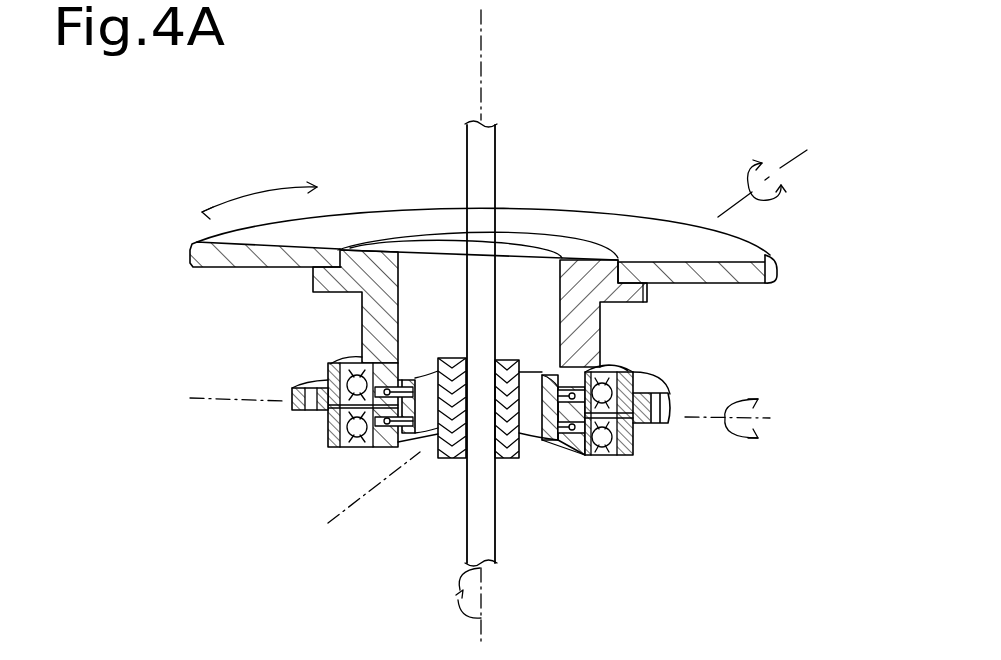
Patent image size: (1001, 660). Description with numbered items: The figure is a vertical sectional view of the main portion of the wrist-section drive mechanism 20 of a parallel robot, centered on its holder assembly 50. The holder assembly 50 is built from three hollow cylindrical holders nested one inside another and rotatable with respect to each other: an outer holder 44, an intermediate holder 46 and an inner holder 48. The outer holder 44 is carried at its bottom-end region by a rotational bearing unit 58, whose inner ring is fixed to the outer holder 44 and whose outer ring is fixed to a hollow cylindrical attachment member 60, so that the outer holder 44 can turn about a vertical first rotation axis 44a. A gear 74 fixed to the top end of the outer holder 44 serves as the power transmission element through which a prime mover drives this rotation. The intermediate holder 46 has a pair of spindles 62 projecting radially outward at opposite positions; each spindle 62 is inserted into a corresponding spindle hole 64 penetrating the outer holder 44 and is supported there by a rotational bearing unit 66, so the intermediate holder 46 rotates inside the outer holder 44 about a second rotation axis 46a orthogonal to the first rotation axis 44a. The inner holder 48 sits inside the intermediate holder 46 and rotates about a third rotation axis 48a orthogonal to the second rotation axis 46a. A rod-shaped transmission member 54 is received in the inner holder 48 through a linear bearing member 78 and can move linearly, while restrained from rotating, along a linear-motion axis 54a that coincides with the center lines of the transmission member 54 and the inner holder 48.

The wrist-section drive mechanism 20 is at (685, 88).
The outer holder 44 is at (362, 315).
The first rotation axis 44a is at (482, 30).
The intermediate holder 46 is at (533, 422).
The second rotation axis 46a is at (208, 399).
The inner holder 48 is at (447, 356).
The third rotation axis 48a is at (335, 524).
The holder assembly 50 is at (737, 315).
The transmission member 54 is at (472, 145).
The linear-motion axis 54a is at (481, 638).
The rotational bearing unit 58 is at (602, 447).
The attachment member 60 is at (672, 385).
The spindle 62 is at (570, 418).
The spindle hole 64 is at (606, 356).
The rotational bearing unit 66 is at (383, 448).
The gear 74 is at (633, 228).
The linear bearing member 78 is at (497, 358).